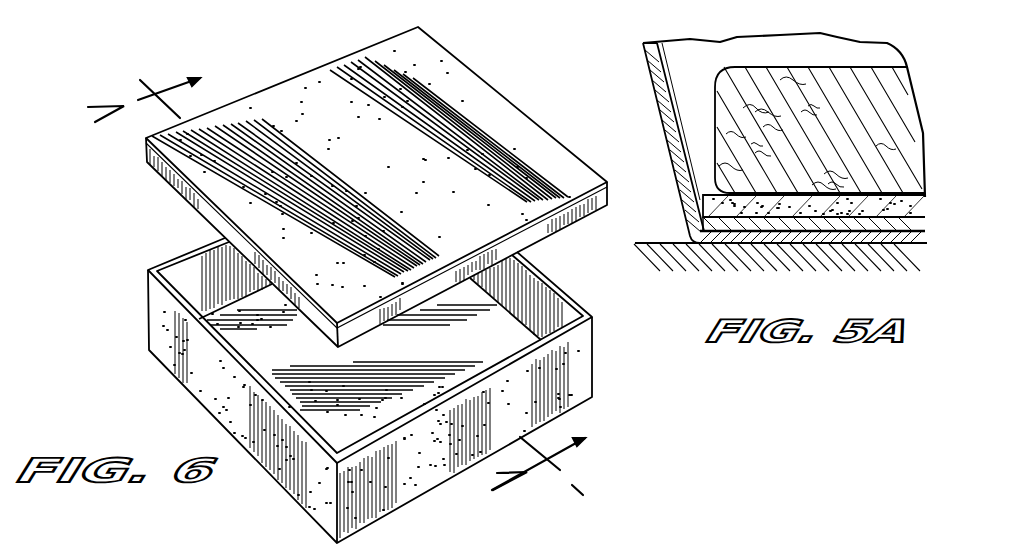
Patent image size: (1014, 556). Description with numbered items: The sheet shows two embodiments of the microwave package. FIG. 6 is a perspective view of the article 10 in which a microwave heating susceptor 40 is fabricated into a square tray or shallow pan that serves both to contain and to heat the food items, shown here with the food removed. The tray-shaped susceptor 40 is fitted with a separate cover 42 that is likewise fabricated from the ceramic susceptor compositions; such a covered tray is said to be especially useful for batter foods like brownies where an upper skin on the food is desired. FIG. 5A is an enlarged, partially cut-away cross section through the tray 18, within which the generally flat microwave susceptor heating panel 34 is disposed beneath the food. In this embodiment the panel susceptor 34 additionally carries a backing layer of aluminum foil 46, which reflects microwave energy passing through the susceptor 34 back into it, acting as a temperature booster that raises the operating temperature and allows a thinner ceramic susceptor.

In FIG. 6, the article 10 is at (183, 233).
In FIG. 6, the cover 42 is at (452, 88).
In FIG. 6, the microwave heating susceptor 40 is at (205, 382).
In FIG. 5A, the tray 18 is at (648, 70).
In FIG. 5A, the microwave susceptor heating panel 34 is at (750, 210).
In FIG. 5A, the aluminum foil 46 is at (882, 222).